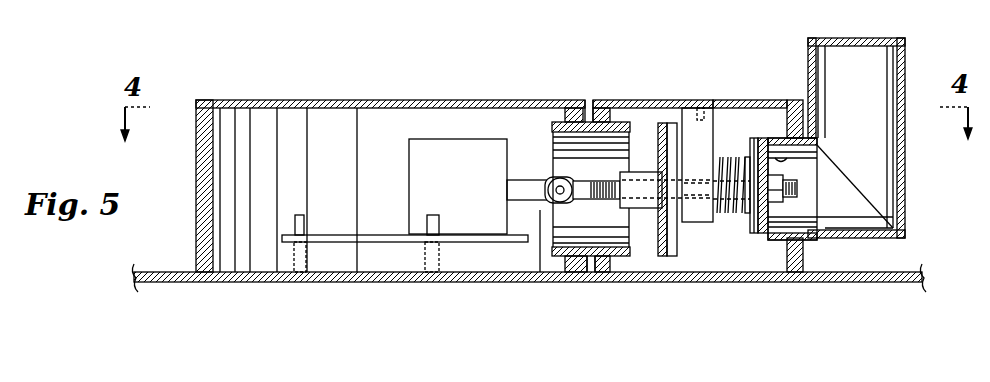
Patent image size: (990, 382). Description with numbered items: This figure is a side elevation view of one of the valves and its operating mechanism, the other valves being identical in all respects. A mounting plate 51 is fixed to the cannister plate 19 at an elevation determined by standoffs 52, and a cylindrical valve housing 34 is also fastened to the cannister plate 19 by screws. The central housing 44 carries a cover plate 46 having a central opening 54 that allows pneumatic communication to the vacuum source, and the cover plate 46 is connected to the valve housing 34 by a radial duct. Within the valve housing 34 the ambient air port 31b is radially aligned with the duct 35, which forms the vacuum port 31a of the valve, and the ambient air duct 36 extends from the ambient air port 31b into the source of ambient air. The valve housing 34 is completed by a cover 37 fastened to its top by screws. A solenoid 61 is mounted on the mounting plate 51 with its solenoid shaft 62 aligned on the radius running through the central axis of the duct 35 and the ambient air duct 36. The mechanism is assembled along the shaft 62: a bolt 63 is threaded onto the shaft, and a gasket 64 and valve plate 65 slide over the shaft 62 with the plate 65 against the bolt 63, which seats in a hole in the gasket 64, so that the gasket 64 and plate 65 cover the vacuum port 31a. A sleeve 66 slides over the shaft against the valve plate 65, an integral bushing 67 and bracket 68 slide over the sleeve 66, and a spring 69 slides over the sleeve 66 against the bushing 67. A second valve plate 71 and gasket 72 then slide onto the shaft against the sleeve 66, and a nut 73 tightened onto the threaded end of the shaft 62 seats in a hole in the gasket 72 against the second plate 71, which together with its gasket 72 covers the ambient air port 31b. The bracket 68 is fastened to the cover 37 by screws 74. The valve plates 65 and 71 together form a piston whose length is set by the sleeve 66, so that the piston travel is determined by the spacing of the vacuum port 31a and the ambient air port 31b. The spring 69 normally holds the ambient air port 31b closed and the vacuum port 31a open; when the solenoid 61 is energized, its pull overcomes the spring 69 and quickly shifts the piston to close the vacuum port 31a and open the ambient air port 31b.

The cannister plate 19 is at (172, 270).
The central housing 44 is at (200, 170).
The cover plate 46 is at (472, 100).
The central opening 54 is at (357, 100).
The cover 37 is at (672, 100).
The bracket 68 is at (722, 107).
The valve housing 34 is at (792, 112).
The ambient air duct 36 is at (905, 160).
The ambient air port 31b is at (797, 165).
The mounting plate 51 is at (348, 234).
The standoffs 52 is at (290, 258).
The solenoid 61 is at (420, 161).
The solenoid shaft 62 is at (593, 181).
The vacuum port 31a is at (625, 233).
The duct 35 is at (589, 122).
The bolt 63 is at (650, 172).
The gasket 64 is at (656, 252).
The valve plate 65 is at (670, 257).
The bushing 67 is at (698, 223).
The screws 74 is at (700, 138).
The sleeve 66 is at (732, 213).
The spring 69 is at (726, 160).
The second valve plate 71 is at (752, 234).
The gasket 72 is at (765, 234).
The nut 73 is at (776, 204).